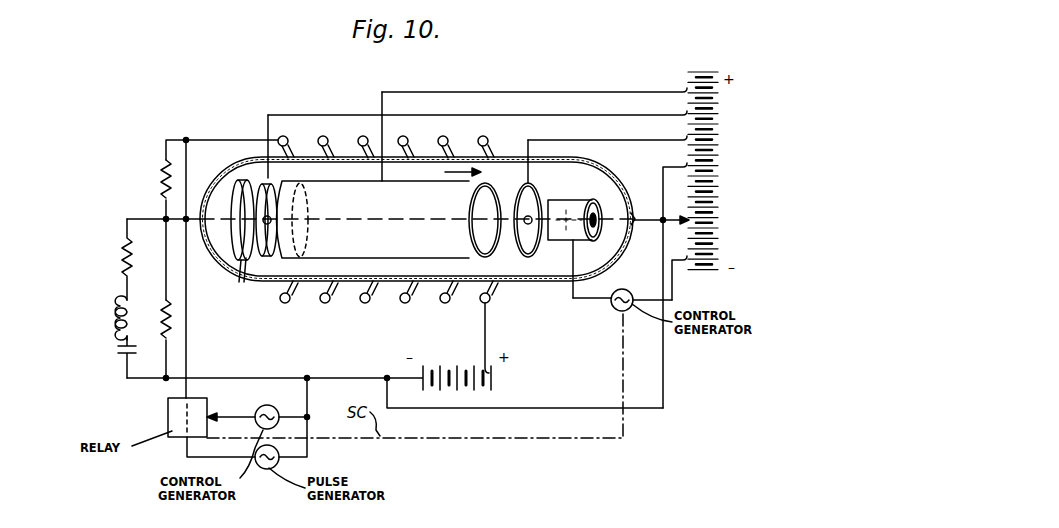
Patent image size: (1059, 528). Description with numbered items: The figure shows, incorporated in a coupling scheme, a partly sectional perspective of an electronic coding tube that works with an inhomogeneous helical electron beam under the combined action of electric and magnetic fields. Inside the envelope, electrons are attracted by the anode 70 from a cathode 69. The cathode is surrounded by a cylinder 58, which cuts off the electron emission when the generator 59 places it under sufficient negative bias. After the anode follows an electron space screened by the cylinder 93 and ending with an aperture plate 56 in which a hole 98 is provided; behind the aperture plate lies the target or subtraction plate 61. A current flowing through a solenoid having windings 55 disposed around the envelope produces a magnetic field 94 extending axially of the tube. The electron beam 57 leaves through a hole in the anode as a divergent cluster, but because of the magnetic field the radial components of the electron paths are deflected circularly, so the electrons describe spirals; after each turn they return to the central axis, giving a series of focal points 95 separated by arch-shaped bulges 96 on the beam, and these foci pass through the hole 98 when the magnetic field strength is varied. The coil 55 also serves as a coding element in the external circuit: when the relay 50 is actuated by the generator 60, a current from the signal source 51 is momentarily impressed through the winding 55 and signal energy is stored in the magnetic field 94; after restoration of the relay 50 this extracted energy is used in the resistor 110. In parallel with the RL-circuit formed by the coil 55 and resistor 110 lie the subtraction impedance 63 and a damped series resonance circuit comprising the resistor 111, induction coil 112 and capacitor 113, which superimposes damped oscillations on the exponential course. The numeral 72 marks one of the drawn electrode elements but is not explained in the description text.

The relay 50 is at (175, 434).
The signal source 51 is at (286, 465).
The solenoid windings 55 is at (362, 298).
The aperture plate 56 is at (260, 178).
The electron beam 57 is at (497, 195).
The cylinder 58 is at (583, 203).
The generator 59 is at (613, 306).
The generator 60 is at (262, 406).
The target or subtraction plate 61 is at (236, 269).
The subtraction impedance 63 is at (159, 174).
The cathode 69 is at (597, 236).
The anode 70 is at (525, 259).
The electrode 72 is at (428, 290).
The cylinder 93 is at (410, 190).
The magnetic field 94 is at (463, 170).
The focal points 95 is at (365, 217).
The bulges 96 is at (322, 217).
The hole 98 is at (234, 280).
The resistor 110 is at (178, 326).
The resistor 111 is at (122, 236).
The induction coil 112 is at (118, 308).
The capacitor 113 is at (126, 365).